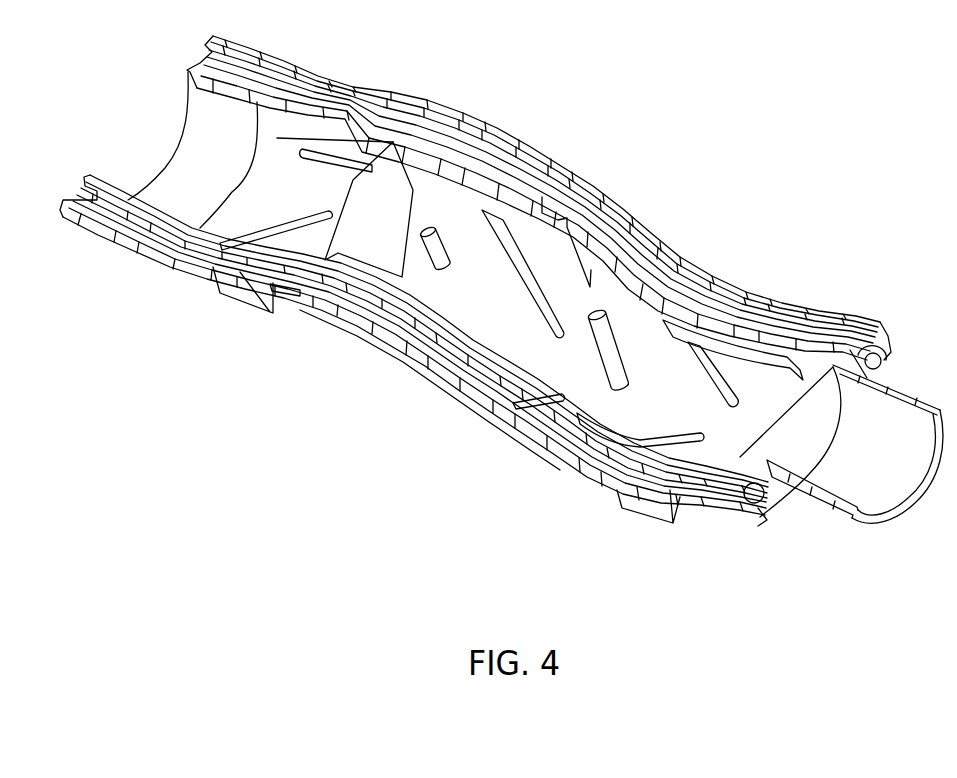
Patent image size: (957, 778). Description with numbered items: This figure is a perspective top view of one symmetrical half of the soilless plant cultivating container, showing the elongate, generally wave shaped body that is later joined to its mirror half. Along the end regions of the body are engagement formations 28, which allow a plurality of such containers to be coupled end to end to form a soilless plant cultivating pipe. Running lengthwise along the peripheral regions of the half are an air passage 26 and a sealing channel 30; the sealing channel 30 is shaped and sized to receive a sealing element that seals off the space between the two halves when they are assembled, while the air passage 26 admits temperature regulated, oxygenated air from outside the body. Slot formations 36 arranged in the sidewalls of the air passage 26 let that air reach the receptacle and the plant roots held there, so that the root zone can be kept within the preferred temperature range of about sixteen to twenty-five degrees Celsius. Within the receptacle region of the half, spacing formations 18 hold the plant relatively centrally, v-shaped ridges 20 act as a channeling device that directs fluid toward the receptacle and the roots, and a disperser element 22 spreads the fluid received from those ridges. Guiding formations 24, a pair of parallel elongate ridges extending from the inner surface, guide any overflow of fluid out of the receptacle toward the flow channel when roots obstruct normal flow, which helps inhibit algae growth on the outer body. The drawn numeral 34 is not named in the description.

The spacing formation 18 is at (432, 230).
The v-shaped ridge 20 is at (357, 163).
The disperser element 22 is at (600, 312).
The guiding formation 24 is at (740, 357).
The air passage 26 is at (886, 358).
The engagement formation 28 is at (190, 72).
The sealing channel 30 is at (880, 323).
The duct body 34 is at (535, 455).
The slot formation 36 is at (362, 122).